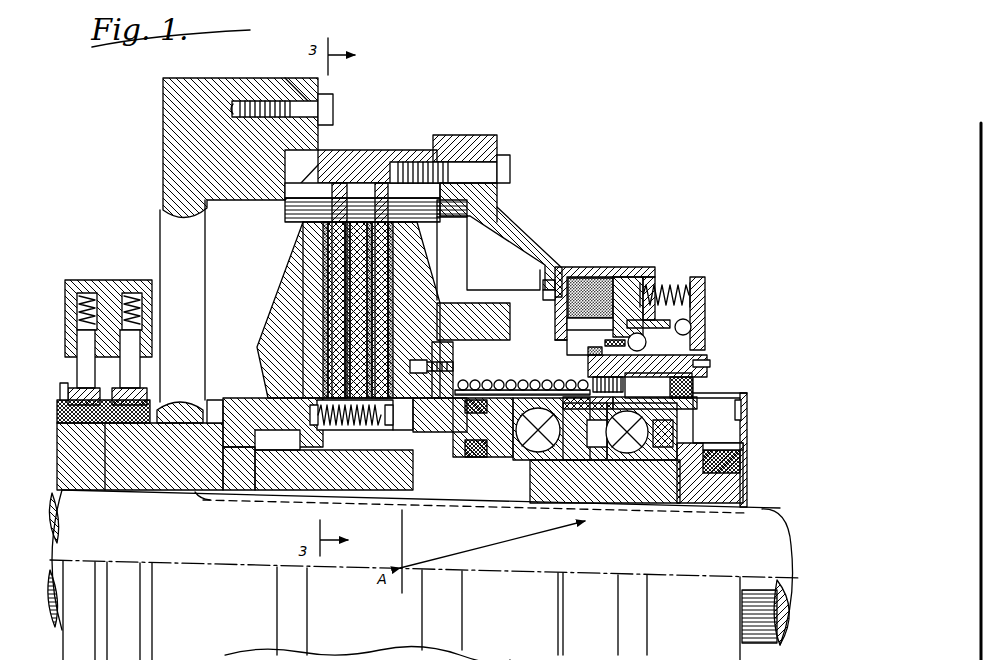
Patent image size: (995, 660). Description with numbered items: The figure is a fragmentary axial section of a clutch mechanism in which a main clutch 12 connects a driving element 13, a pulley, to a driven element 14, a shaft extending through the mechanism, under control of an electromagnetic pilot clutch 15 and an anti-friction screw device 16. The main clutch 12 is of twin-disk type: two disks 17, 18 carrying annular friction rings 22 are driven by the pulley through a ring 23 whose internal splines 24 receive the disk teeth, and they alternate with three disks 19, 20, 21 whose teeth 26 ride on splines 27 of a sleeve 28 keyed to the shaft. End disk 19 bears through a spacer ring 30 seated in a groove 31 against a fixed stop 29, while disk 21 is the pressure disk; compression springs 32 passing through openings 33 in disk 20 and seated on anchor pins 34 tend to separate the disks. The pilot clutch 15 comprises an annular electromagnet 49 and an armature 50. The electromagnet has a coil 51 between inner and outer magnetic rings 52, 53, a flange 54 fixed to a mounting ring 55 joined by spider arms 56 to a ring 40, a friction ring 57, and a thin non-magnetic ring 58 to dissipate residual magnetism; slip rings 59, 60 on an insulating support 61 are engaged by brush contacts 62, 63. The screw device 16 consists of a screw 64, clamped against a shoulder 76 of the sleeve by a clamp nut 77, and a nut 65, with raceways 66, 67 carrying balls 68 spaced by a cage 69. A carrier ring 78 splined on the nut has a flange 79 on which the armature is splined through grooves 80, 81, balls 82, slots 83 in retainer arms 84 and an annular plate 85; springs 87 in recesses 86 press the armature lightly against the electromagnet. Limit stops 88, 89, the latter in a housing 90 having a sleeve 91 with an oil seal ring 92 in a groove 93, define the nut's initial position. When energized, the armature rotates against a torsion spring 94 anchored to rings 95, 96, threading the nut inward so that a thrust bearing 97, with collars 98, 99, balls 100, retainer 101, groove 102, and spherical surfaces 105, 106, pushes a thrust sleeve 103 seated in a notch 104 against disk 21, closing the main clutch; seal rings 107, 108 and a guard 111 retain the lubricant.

The main clutch 12 is at (268, 257).
The driving element 13 is at (168, 170).
The driven element 14 is at (785, 522).
The pilot clutch 15 is at (632, 262).
The anti-friction screw device 16 is at (712, 437).
The disk 17 is at (353, 198).
The disk 18 is at (372, 200).
The disk 19 is at (302, 288).
The disk 20 is at (330, 278).
The disk 21 is at (437, 272).
The annular friction rings 22 is at (369, 325).
The ring 23 is at (333, 150).
The longitudinal splines 24 is at (305, 207).
The teeth 26 is at (378, 452).
The longitudinal splines 27 is at (268, 435).
The sleeve 28 is at (720, 490).
The fixed stop 29 is at (240, 462).
The spacer ring 30 is at (258, 398).
The annular groove 31 is at (265, 345).
The coiled compression springs 32 is at (345, 430).
The openings 33 is at (360, 432).
The anchor pins 34 is at (388, 430).
The ring 40 is at (462, 243).
The annular electromagnet 49 is at (610, 262).
The armature 50 is at (650, 282).
The annular coil 51 is at (555, 305).
The inner ring 52 is at (575, 323).
The outer ring 53 is at (592, 276).
The outer peripheral flange 54 is at (548, 300).
The mounting ring 55 is at (556, 270).
The spider arms 56 is at (528, 222).
The flat ring 57 is at (635, 292).
The thin ring 58 is at (566, 280).
The slip ring 59 is at (115, 385).
The slip ring 60 is at (150, 398).
The support 61 is at (108, 490).
The brush contact 62 is at (100, 372).
The brush contact 63 is at (120, 375).
The screw 64 is at (690, 470).
The nut 65 is at (742, 396).
The raceway 66 is at (617, 470).
The raceway 67 is at (595, 468).
The anti-friction balls 68 is at (660, 470).
The retainer ring or cage 69 is at (742, 468).
The peripheral shoulder 76 is at (635, 505).
The clamp nut 77 is at (743, 452).
The ring 78 is at (658, 384).
The annular flange 79 is at (710, 362).
The spline grooves 80 is at (680, 345).
The grooves 81 is at (705, 322).
The balls 82 is at (602, 352).
The slots 83 is at (627, 343).
The retainer arms 84 is at (691, 330).
The annular plate 85 is at (705, 290).
The recesses 86 is at (682, 285).
The springs 87 is at (694, 286).
The limit stop 88 is at (742, 406).
The limit stop 89 is at (747, 412).
The annular housing 90 is at (747, 426).
The cylindrical sleeve 91 is at (718, 394).
The oil seal ring 92 is at (688, 378).
The annular groove 93 is at (670, 388).
The coiled torsion spring 94 is at (500, 380).
The anchor ring 95 is at (455, 338).
The anchor ring 96 is at (565, 380).
The thrust bearing 97 is at (525, 455).
The thrust collar 98 is at (478, 500).
The thrust collar 99 is at (610, 455).
The balls 100 is at (545, 498).
The retainer 101 is at (548, 460).
The flat annular groove 102 is at (472, 458).
The thrust sleeve 103 is at (470, 415).
The annular notch 104 is at (395, 460).
The concave partial spherical bearing surface 105 is at (487, 498).
The convex partial spherical bearing surface 106 is at (490, 498).
The seal ring 107 is at (446, 470).
The seal ring 108 is at (477, 398).
The cylindrical sleeve or guard 111 is at (525, 383).